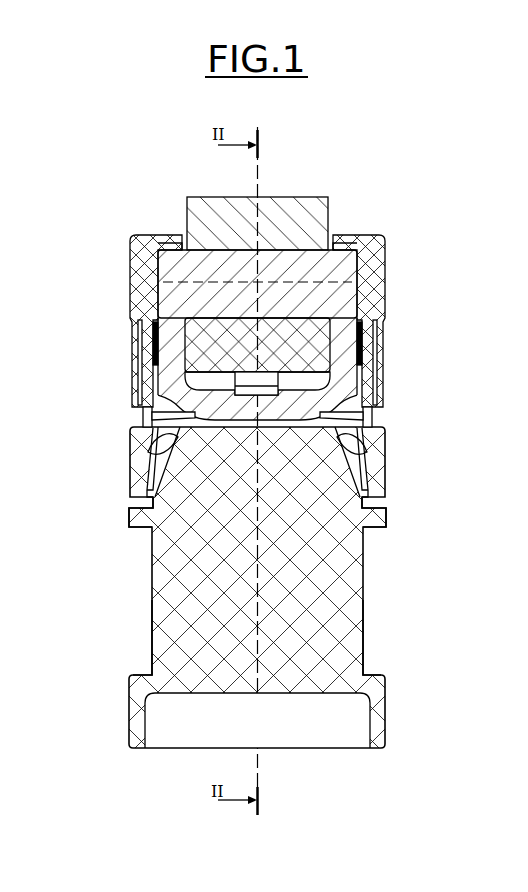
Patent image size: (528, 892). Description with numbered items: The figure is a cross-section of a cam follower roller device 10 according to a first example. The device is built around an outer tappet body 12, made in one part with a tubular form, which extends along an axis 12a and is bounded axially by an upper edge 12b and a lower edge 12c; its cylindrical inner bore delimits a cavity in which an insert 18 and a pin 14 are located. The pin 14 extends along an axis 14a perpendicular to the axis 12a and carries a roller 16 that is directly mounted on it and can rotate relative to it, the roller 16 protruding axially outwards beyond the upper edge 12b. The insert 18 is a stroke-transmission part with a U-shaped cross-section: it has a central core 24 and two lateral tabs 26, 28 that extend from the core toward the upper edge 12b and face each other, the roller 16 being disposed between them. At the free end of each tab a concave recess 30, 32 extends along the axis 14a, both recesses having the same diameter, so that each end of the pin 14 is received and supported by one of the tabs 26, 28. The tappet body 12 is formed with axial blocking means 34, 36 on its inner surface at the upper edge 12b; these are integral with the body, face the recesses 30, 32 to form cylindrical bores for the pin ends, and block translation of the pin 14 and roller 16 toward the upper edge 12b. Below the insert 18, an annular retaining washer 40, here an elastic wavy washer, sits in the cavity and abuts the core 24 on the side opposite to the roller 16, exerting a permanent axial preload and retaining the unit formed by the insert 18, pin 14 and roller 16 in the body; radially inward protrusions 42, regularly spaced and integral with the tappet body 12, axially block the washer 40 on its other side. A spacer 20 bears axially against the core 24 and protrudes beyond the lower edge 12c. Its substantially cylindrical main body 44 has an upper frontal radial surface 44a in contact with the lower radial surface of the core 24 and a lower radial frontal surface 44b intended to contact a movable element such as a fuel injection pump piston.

The cam follower roller device 10 is at (122, 138).
The tappet body 12 is at (121, 441).
The axis 12a is at (259, 779).
The upper edge 12b is at (140, 234).
The lower edge 12c is at (135, 505).
The pin 14 is at (168, 262).
The axis 14a is at (147, 275).
The roller 16 is at (292, 202).
The insert 18 is at (366, 383).
The spacer 20 is at (371, 631).
The central core 24 is at (232, 407).
The lateral tab 26 is at (357, 354).
The lateral tab 28 is at (172, 356).
The concave recess 30 is at (347, 306).
The concave recess 32 is at (153, 321).
The axial blocking means 34 is at (350, 236).
The axial blocking means 36 is at (166, 236).
The retaining washer 40 is at (377, 428).
The protrusions 42 is at (172, 436).
The main body 44 is at (347, 596).
The upper frontal radial surface 44a is at (375, 408).
The lower radial frontal surface 44b is at (188, 697).